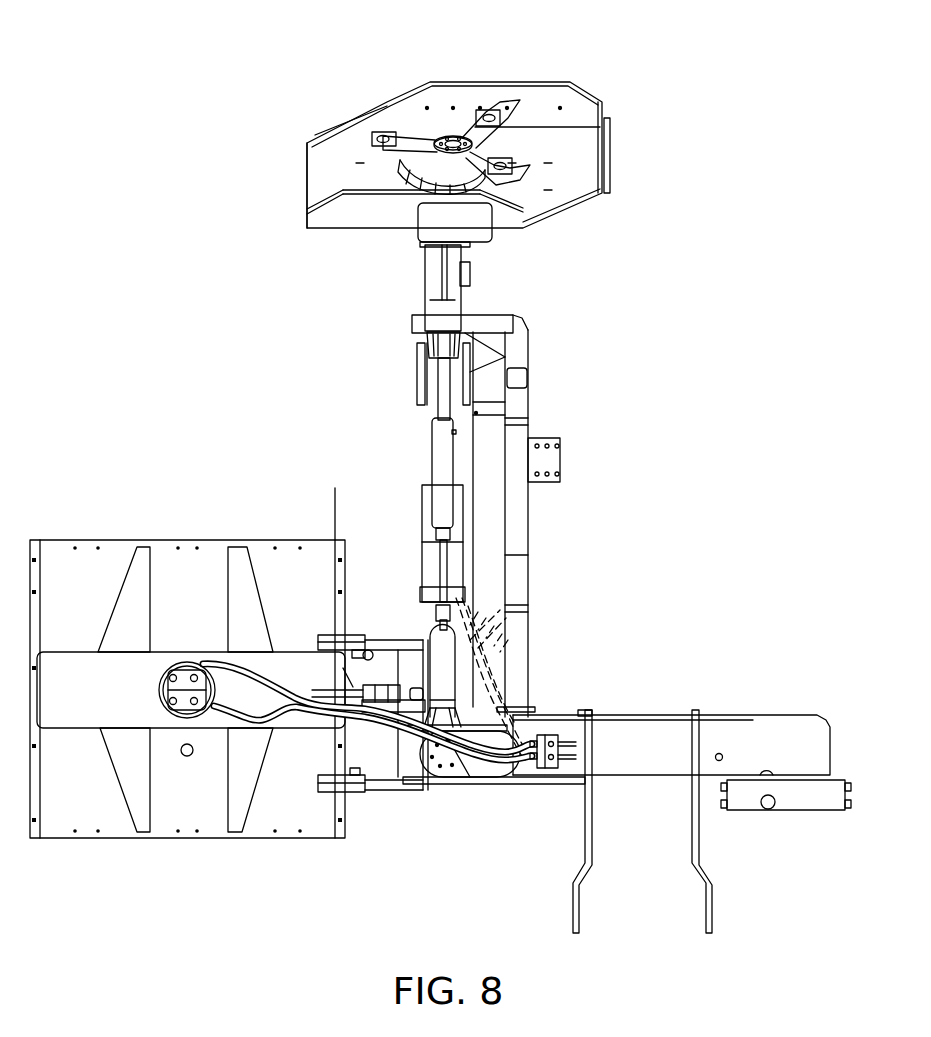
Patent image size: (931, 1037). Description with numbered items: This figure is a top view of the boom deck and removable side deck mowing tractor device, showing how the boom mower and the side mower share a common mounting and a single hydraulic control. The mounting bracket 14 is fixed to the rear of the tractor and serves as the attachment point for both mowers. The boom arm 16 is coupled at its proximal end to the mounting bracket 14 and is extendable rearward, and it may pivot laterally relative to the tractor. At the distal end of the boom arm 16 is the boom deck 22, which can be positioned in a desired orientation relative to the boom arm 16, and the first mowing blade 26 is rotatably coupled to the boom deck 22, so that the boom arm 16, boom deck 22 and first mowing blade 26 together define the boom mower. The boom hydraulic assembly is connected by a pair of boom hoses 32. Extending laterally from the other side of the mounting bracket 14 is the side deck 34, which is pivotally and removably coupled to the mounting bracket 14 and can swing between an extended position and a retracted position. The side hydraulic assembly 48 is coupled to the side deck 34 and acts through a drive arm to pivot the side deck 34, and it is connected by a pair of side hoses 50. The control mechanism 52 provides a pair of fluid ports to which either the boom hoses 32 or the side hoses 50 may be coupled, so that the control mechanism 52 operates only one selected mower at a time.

The mounting bracket 14 is at (642, 740).
The boom arm 16 is at (430, 472).
The boom deck 22 is at (570, 153).
The first mowing blade 26 is at (470, 138).
The boom hoses 32 is at (505, 618).
The side deck 34 is at (88, 565).
The side hydraulic assembly 48 is at (168, 668).
The side hoses 50 is at (272, 670).
The control mechanism 52 is at (553, 770).